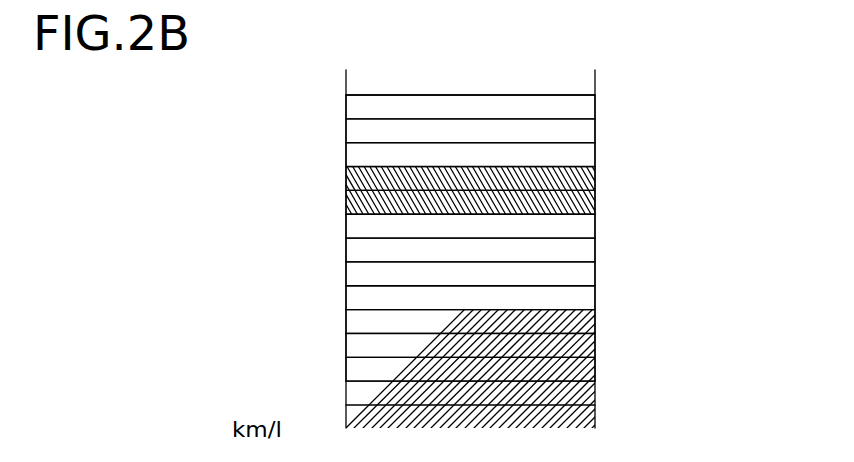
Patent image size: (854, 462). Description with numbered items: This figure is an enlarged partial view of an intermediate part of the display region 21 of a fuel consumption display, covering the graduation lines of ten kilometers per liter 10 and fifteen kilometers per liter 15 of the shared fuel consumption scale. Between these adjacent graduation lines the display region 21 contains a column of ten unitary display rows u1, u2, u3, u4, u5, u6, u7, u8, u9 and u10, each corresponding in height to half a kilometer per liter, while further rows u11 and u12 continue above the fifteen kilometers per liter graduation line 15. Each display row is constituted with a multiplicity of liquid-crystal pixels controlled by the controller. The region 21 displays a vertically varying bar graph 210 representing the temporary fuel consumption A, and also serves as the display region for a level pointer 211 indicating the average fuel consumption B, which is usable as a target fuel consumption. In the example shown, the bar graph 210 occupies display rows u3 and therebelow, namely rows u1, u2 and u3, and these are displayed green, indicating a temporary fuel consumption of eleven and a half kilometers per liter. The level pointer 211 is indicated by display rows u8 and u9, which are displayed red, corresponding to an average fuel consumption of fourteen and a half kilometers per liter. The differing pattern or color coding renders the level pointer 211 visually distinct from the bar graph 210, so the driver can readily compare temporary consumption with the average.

The display region 21 is at (603, 50).
The 15 km/l graduation line 15 is at (346, 143).
The 10 km/l graduation line 10 is at (346, 381).
The level pointer 211 is at (340, 167).
The bar graph 210 is at (342, 428).
The display row u1 is at (595, 370).
The display row u2 is at (595, 345).
The display row u3 is at (595, 320).
The display row u4 is at (595, 297).
The display row u5 is at (595, 272).
The display row u6 is at (595, 250).
The display row u7 is at (595, 226).
The display row u8 is at (595, 202).
The display row u9 is at (595, 177).
The display row u10 is at (595, 153).
The display row u11 is at (595, 128).
The display row u12 is at (595, 103).